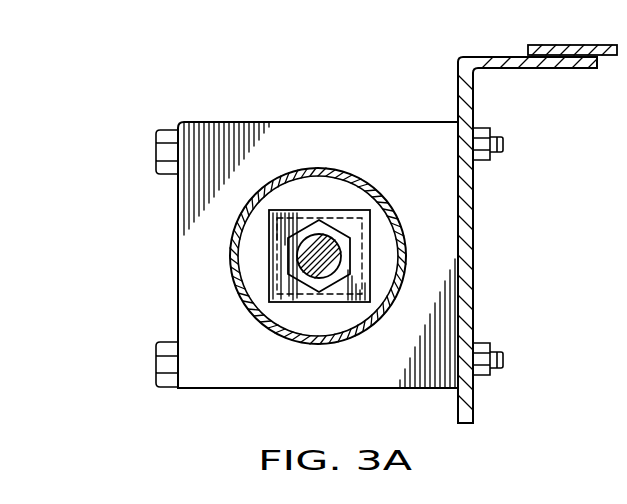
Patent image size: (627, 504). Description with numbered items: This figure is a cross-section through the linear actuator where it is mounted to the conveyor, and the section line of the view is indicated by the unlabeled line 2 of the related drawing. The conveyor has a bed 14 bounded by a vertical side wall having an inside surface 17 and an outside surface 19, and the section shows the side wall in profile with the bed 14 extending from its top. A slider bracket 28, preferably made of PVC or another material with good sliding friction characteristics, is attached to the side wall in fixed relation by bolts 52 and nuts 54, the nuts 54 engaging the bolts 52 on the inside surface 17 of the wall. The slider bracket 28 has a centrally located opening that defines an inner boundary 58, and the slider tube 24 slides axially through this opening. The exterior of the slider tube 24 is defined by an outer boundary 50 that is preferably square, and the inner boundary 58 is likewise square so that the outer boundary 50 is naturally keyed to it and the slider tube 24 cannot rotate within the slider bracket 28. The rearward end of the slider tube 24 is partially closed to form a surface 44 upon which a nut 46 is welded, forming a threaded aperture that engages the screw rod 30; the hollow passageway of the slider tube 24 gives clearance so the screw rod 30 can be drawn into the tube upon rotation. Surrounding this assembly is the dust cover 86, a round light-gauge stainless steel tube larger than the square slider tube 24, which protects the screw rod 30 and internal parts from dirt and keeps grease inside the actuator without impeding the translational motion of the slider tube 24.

The support surface 2 is at (563, 45).
The bed 14 is at (495, 57).
The inside surface 17 is at (475, 100).
The outside surface 19 is at (463, 410).
The slider tube 24 is at (320, 210).
The slider bracket 28 is at (419, 166).
The screw rod 30 is at (323, 275).
The surface 44 is at (299, 293).
The nut 46 is at (345, 214).
The outer boundary 50 is at (352, 250).
The bolt 52 is at (158, 148).
The nut 54 is at (480, 160).
The inner boundary 58 is at (260, 260).
The dust cover 86 is at (249, 309).